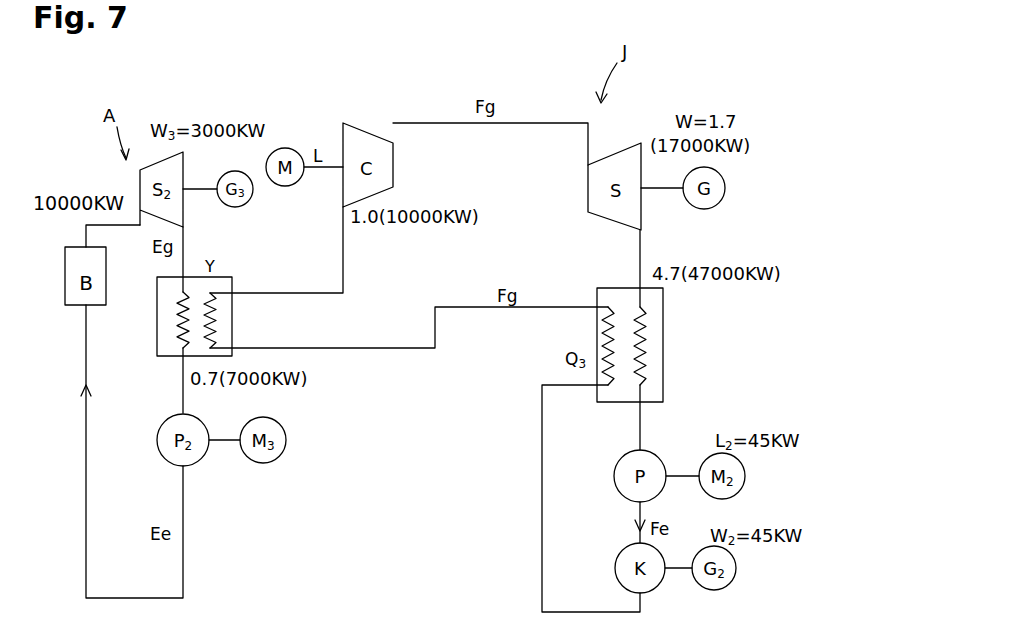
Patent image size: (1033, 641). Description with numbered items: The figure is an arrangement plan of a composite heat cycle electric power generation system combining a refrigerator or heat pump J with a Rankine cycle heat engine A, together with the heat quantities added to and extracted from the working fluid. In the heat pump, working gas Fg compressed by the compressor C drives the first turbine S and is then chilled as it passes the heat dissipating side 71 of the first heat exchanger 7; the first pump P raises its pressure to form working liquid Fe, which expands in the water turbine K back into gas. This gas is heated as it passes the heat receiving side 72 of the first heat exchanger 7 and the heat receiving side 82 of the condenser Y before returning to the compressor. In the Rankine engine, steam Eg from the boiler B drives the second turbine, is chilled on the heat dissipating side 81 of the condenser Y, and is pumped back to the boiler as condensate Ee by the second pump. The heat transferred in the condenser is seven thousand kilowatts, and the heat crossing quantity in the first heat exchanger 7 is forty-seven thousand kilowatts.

The first heat exchanger 7 is at (663, 375).
The heat dissipating side 71 is at (645, 325).
The heat receiving side 72 is at (606, 325).
The heat dissipating side 81 is at (183, 325).
The heat receiving side 82 is at (214, 324).